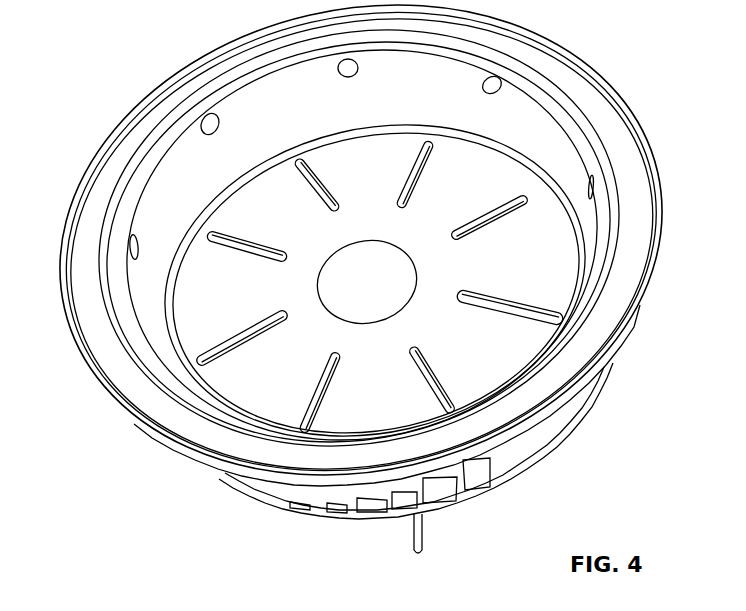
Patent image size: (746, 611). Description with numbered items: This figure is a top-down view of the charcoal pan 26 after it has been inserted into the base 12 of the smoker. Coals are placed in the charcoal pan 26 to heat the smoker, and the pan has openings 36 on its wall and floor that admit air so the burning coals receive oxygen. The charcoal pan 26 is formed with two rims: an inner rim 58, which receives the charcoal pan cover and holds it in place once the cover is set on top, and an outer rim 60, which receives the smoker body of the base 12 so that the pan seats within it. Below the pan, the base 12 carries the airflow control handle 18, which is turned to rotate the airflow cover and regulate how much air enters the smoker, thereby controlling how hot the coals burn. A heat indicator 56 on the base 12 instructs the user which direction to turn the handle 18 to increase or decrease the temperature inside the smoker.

The charcoal pan 26 is at (134, 54).
The outer rim 60 is at (88, 260).
The inner rim 58 is at (232, 420).
The openings 36 is at (138, 246).
The base 12 is at (530, 442).
The heat indicator 56 is at (292, 495).
The airflow control handle 18 is at (421, 556).